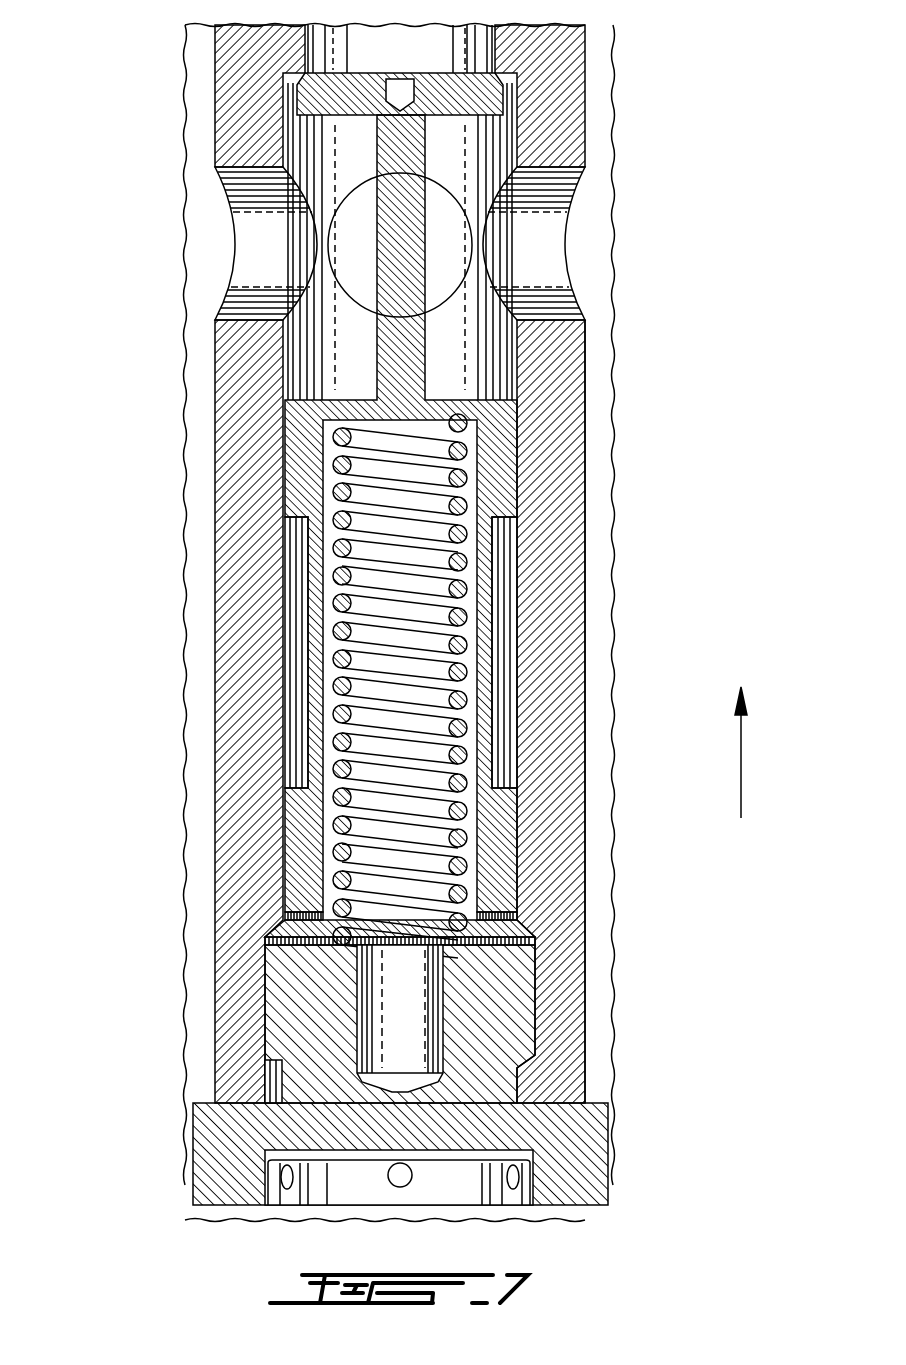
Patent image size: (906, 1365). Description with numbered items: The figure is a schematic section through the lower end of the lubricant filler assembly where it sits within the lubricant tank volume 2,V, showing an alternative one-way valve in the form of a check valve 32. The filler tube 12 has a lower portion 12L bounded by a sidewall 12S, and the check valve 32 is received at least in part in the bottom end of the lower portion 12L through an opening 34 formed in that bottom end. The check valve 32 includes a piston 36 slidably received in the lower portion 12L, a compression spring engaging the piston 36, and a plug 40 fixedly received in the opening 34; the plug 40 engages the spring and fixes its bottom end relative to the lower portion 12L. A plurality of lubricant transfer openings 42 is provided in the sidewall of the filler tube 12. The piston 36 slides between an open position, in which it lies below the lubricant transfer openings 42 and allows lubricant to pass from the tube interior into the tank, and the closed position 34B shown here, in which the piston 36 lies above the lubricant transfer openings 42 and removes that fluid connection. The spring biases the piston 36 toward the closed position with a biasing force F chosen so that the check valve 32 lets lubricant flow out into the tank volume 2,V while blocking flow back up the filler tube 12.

The filler tube 12 is at (493, 564).
The lower portion 12L is at (557, 512).
The sidewall 12S is at (590, 658).
The check valve 32 is at (528, 416).
The opening 34 is at (273, 1072).
The valve body bore 34B is at (158, 432).
The piston 36 is at (478, 91).
The plug 40 is at (590, 1157).
The lubricant transfer openings 42 is at (592, 252).
The biasing force F is at (741, 752).
The lubricant tank volume 2,V is at (595, 963).